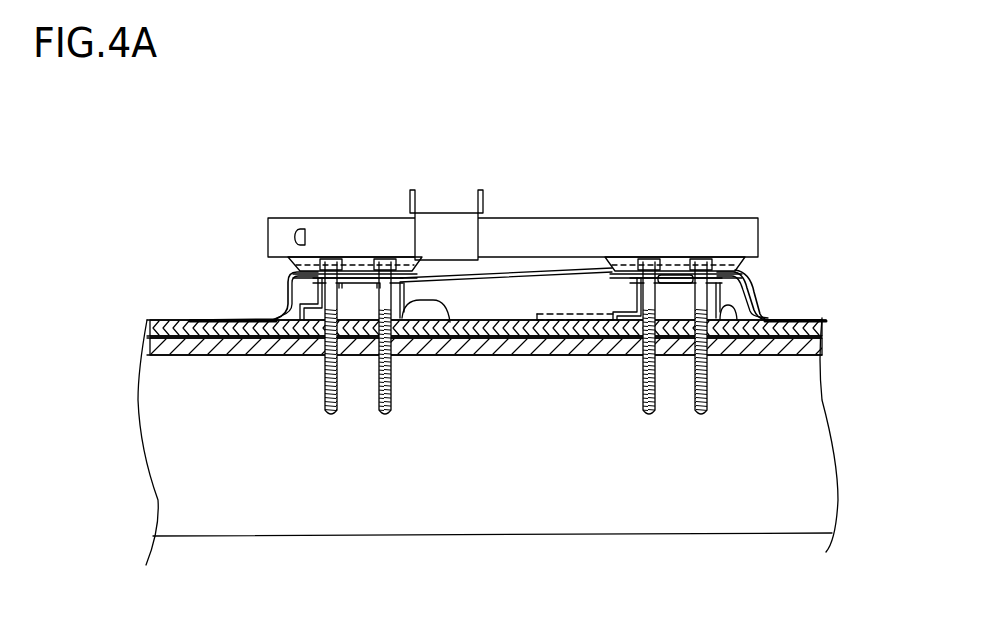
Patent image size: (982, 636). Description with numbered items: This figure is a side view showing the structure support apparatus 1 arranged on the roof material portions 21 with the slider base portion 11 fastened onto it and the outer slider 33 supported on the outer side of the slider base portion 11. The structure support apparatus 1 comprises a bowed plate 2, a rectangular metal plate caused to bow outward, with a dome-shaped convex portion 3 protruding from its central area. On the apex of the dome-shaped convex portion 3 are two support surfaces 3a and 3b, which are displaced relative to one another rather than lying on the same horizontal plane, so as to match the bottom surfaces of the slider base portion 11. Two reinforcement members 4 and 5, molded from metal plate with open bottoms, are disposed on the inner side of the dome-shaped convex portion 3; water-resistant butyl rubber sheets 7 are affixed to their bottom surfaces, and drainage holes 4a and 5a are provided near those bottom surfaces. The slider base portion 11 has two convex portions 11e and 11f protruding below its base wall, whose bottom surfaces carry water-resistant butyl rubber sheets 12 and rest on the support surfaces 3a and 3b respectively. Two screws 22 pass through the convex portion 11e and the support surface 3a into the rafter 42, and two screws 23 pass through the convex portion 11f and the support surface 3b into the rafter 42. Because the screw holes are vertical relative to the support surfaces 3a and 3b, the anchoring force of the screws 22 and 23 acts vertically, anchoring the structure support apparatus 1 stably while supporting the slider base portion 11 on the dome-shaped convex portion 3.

The structure support apparatus 1 is at (752, 302).
The bowed plate 2 is at (230, 318).
The dome-shaped convex portion 3 is at (285, 312).
The support surface 3a is at (358, 273).
The support surface 3b is at (672, 273).
The reinforcement member 4 is at (450, 325).
The drainage hole 4a is at (306, 312).
The reinforcement member 5 is at (740, 318).
The drainage hole 5a is at (618, 316).
The water-resistant butyl rubber sheet 7 is at (366, 340).
The slider base portion 11 is at (752, 210).
The convex portion 11e is at (312, 265).
The convex portion 11f is at (620, 270).
The water-resistant butyl rubber sheet 12 is at (292, 273).
The roof material portion 21 is at (180, 318).
The screw 22 is at (331, 414).
The screw 23 is at (649, 414).
The outer slider 33 is at (447, 227).
The rafter 42 is at (752, 510).